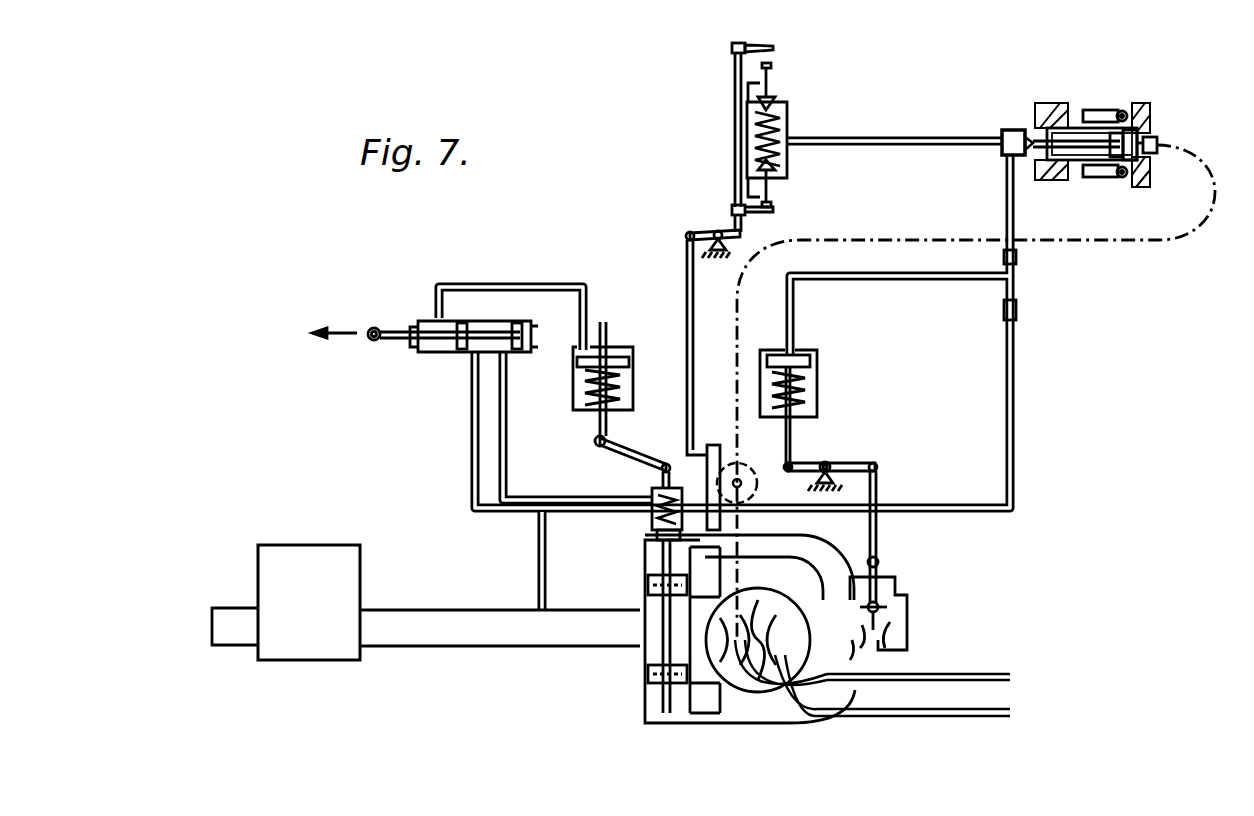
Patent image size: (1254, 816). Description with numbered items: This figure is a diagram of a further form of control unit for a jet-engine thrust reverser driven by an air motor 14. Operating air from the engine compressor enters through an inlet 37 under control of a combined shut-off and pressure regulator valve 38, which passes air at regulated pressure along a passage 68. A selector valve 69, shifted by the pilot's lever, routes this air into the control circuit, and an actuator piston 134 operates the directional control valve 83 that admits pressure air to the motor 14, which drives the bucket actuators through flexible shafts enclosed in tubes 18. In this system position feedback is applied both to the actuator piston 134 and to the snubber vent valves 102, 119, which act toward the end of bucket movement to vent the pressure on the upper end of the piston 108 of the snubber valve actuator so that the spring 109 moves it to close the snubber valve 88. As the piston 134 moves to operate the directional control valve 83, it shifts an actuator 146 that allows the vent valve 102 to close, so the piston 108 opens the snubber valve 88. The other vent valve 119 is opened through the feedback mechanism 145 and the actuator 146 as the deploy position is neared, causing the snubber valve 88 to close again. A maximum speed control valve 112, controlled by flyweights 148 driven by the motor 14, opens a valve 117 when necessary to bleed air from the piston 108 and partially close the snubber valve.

The air motor 14 is at (757, 610).
The tubes 18 is at (947, 710).
The inlet 37 is at (222, 610).
The combined shut-off and pressure regulator valve 38 is at (358, 575).
The passage 68 is at (515, 646).
The selector valve 69 is at (463, 353).
The directional control valve 83 is at (640, 683).
The snubber valve 88 is at (902, 627).
The vent valve 102 is at (778, 168).
The piston 108 is at (820, 367).
The spring 109 is at (803, 388).
The maximum speed control valve 112 is at (1152, 135).
The valve 117 is at (1020, 130).
The vent valve 119 is at (780, 100).
The actuator piston 134 is at (608, 360).
The feedback mechanism 145 is at (738, 468).
The actuator 146 is at (735, 131).
The flyweights 148 is at (1098, 110).